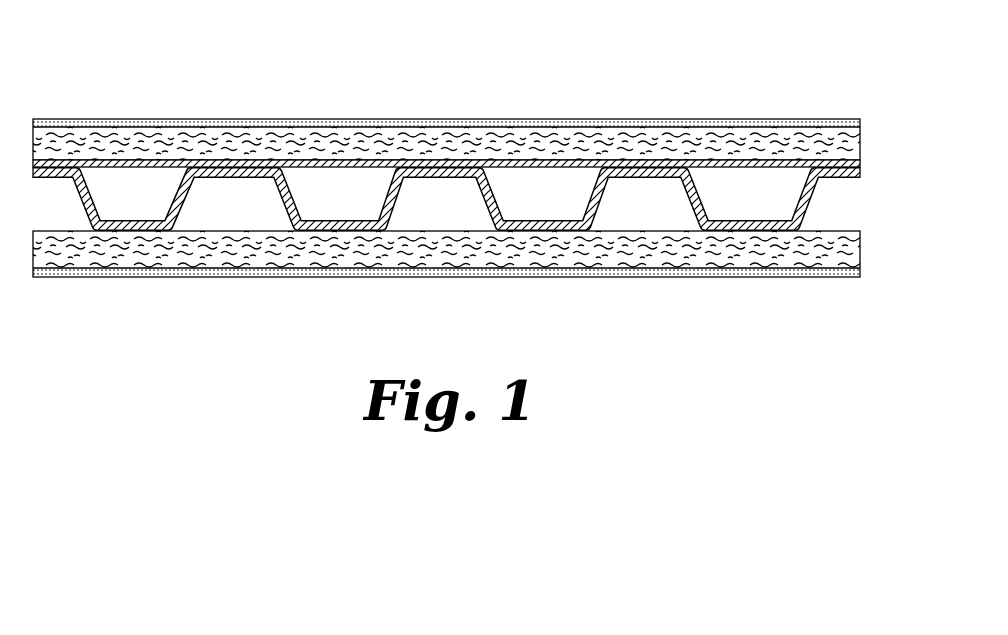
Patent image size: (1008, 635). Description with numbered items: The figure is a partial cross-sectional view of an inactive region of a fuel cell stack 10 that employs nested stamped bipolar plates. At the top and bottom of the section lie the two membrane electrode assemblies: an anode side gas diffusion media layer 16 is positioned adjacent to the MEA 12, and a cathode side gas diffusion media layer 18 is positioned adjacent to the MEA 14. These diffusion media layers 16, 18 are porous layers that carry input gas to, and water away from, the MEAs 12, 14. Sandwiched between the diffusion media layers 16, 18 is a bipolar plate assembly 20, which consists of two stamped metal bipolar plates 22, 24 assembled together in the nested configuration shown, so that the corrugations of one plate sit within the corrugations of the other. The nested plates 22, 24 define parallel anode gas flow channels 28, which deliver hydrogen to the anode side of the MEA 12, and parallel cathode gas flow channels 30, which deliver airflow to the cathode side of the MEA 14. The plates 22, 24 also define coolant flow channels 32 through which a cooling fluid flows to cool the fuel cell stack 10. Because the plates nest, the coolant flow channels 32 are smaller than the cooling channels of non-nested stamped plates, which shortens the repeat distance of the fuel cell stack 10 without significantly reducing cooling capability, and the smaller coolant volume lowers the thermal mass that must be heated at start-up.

The fuel cell stack 10 is at (547, 86).
The MEA 12 is at (230, 119).
The MEA 14 is at (712, 274).
The anode side gas diffusion media layer 16 is at (842, 138).
The cathode side gas diffusion media layer 18 is at (782, 252).
The bipolar plate assembly 20 is at (813, 197).
The stamped metal bipolar plate 22 is at (500, 177).
The stamped metal bipolar plate 24 is at (283, 185).
The anode gas flow channels 28 is at (150, 180).
The cathode gas flow channels 30 is at (632, 218).
The coolant flow channels 32 is at (362, 185).